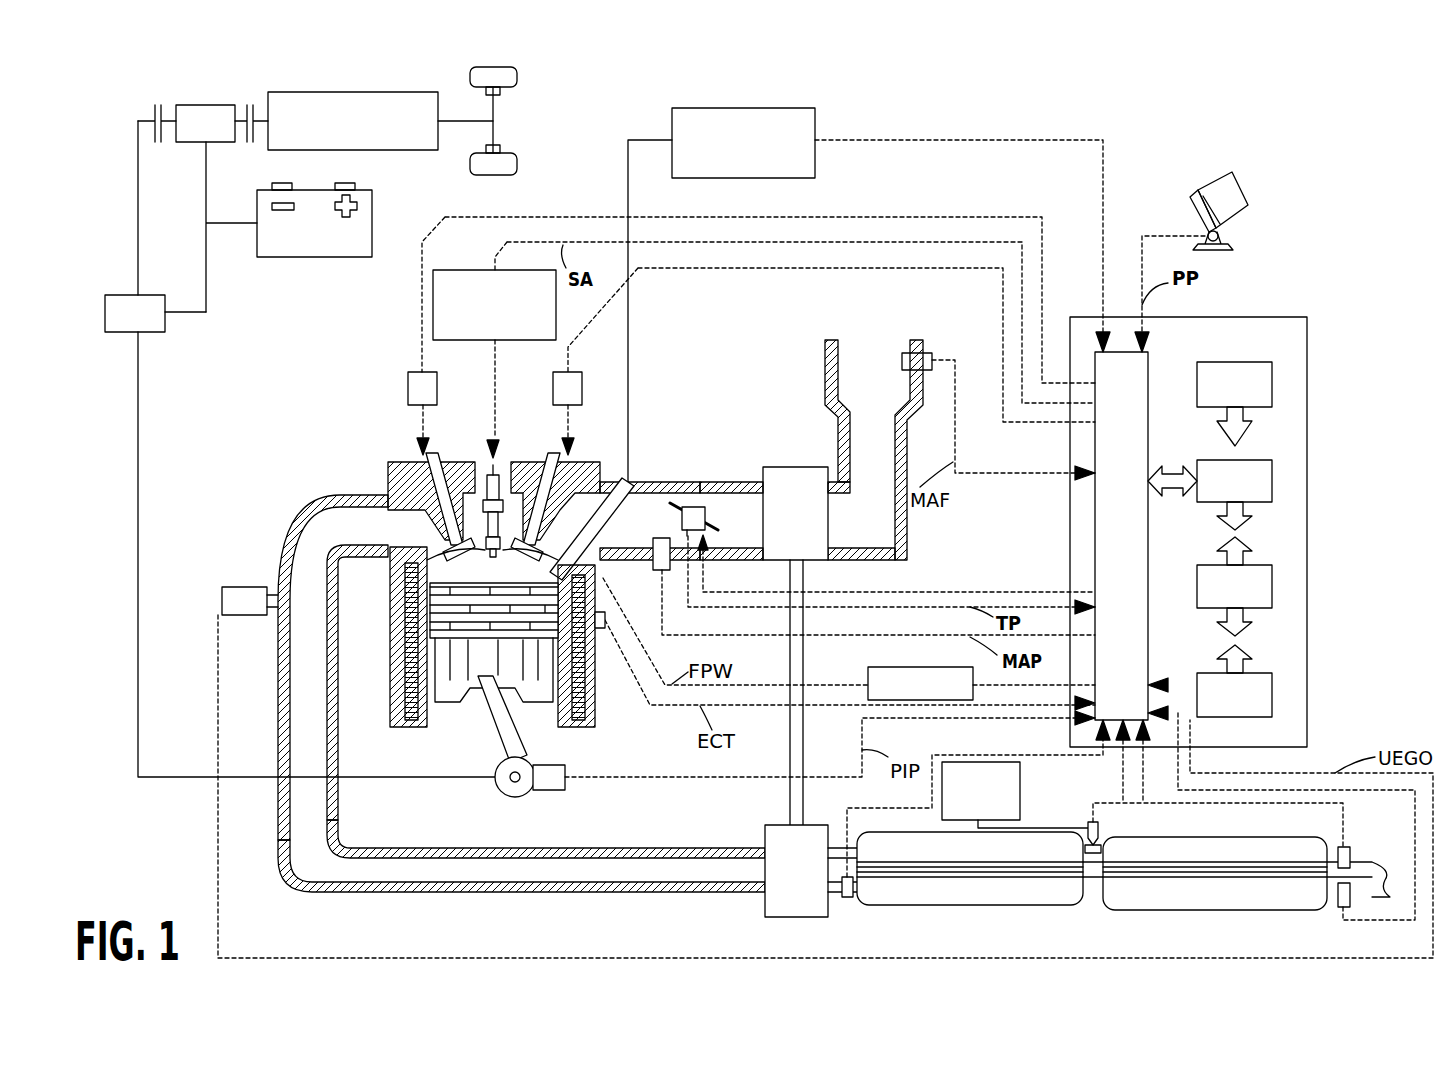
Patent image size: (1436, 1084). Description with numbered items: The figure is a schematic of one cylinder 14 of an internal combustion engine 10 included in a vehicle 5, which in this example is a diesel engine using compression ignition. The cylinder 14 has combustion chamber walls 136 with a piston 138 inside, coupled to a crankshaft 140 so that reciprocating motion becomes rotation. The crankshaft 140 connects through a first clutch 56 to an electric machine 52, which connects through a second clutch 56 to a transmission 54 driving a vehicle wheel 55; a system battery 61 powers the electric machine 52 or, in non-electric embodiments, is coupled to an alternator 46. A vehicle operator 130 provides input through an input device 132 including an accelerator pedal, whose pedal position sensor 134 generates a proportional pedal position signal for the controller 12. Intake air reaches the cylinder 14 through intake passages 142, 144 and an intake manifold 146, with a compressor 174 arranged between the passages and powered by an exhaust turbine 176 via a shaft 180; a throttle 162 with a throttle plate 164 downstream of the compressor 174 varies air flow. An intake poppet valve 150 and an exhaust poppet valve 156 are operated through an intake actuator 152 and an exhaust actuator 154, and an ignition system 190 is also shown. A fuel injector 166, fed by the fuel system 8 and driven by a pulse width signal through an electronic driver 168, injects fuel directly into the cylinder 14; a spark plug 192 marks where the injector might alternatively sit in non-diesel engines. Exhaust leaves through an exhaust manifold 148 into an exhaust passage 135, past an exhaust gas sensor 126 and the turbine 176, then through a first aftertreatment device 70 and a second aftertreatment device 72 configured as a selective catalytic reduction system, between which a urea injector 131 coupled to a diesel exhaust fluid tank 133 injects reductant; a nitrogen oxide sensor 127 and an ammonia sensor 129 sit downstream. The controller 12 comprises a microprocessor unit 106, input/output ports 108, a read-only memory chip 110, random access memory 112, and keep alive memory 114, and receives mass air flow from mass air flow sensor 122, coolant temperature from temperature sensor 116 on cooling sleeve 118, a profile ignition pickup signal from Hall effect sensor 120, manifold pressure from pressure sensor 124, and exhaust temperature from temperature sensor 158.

The vehicle 5 is at (1348, 98).
The fuel system 8 is at (780, 108).
The internal combustion engine 10 is at (320, 415).
The controller 12 is at (1307, 318).
The cylinder 14 is at (410, 575).
The alternator 46 is at (105, 325).
The electric machine 52 is at (187, 105).
The transmission 54 is at (418, 150).
The vehicle wheel 55 is at (478, 70).
The clutch 56 is at (155, 110).
The system battery 61 is at (310, 257).
The first aftertreatment device 70 is at (930, 905).
The second aftertreatment device 72 is at (1178, 910).
The microprocessor unit 106 is at (1272, 478).
The input/output ports 108 is at (1150, 360).
The read-only memory chip 110 is at (1272, 382).
The random access memory 112 is at (1272, 588).
The keep alive memory 114 is at (1272, 690).
The temperature sensor 116 is at (600, 575).
The cooling sleeve 118 is at (597, 630).
The Hall effect sensor 120 is at (565, 790).
The mass air flow sensor 122 is at (925, 355).
The MAP sensor 124 is at (666, 582).
The exhaust gas sensor 126 is at (222, 592).
The second exhaust gas sensor 127 is at (1343, 845).
The third exhaust gas sensor 129 is at (1343, 908).
The vehicle operator 130 is at (1245, 198).
The urea injector 131 is at (1093, 825).
The input device 132 is at (1195, 212).
The DEF tank 133 is at (1020, 795).
The pedal position sensor 134 is at (1225, 237).
The exhaust passage 135 is at (676, 848).
The combustion chamber walls 136 is at (430, 712).
The piston 138 is at (478, 680).
The crankshaft 140 is at (497, 790).
The intake passage 142 is at (874, 450).
The intake passage 144 is at (731, 521).
The intake manifold 146 is at (650, 521).
The exhaust manifold 148 is at (333, 667).
The intake poppet valve 150 is at (503, 495).
The intake actuator 152 is at (553, 390).
The exhaust actuator 154 is at (405, 392).
The exhaust poppet valve 156 is at (390, 497).
The temperature sensor 158 is at (847, 897).
The throttle 162 is at (700, 502).
The throttle plate 164 is at (672, 501).
The fuel injector 166 is at (548, 570).
The electronic driver 168 is at (870, 668).
The compressor 174 is at (806, 513).
The exhaust turbine 176 is at (811, 871).
The shaft 180 is at (805, 730).
The ignition system 190 is at (450, 270).
The spark plug 192 is at (487, 498).